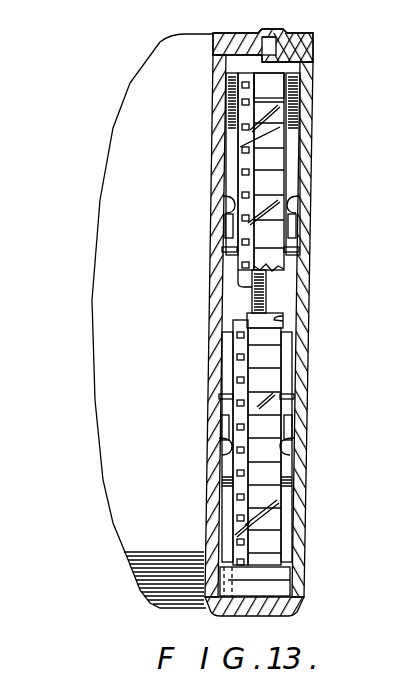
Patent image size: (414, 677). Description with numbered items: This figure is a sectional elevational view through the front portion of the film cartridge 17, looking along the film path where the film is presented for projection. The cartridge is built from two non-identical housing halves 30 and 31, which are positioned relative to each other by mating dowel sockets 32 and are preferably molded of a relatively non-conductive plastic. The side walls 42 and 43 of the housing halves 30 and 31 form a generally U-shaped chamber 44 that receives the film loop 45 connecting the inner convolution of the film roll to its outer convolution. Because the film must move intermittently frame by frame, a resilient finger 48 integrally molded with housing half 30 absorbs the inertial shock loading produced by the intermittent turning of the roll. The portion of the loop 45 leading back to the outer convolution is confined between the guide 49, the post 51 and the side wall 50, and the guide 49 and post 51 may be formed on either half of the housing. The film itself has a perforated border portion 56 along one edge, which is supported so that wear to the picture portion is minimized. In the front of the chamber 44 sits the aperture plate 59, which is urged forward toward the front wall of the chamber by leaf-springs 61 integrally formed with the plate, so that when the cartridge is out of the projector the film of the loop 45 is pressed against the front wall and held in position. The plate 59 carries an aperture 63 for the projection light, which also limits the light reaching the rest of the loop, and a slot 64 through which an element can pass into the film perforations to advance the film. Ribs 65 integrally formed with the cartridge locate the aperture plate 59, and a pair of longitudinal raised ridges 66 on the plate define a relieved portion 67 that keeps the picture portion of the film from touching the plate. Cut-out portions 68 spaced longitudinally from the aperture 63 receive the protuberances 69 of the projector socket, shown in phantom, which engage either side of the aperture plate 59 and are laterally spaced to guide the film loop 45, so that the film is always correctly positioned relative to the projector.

The film cartridge 17 is at (110, 527).
The housing half 30 is at (310, 37).
The housing half 31 is at (160, 43).
The mating dowel sockets 32 is at (268, 33).
The side wall 42 is at (300, 138).
The side wall 43 is at (228, 130).
The U-shaped chamber 44 is at (284, 163).
The film loop 45 is at (283, 78).
The resilient finger 48 is at (297, 108).
The guide 49 is at (285, 538).
The side wall 50 is at (262, 596).
The post 51 is at (282, 590).
The perforated border portion 56 is at (240, 372).
The aperture plate 59 is at (283, 292).
The leaf-springs 61 is at (240, 242).
The aperture 63 is at (283, 321).
The slot 64 is at (247, 288).
The ribs 65 is at (225, 200).
The raised portions or ridges 66 is at (219, 348).
The relieved portion 67 is at (252, 305).
The cut-out portions 68 is at (222, 251).
The protuberances 69 is at (225, 222).